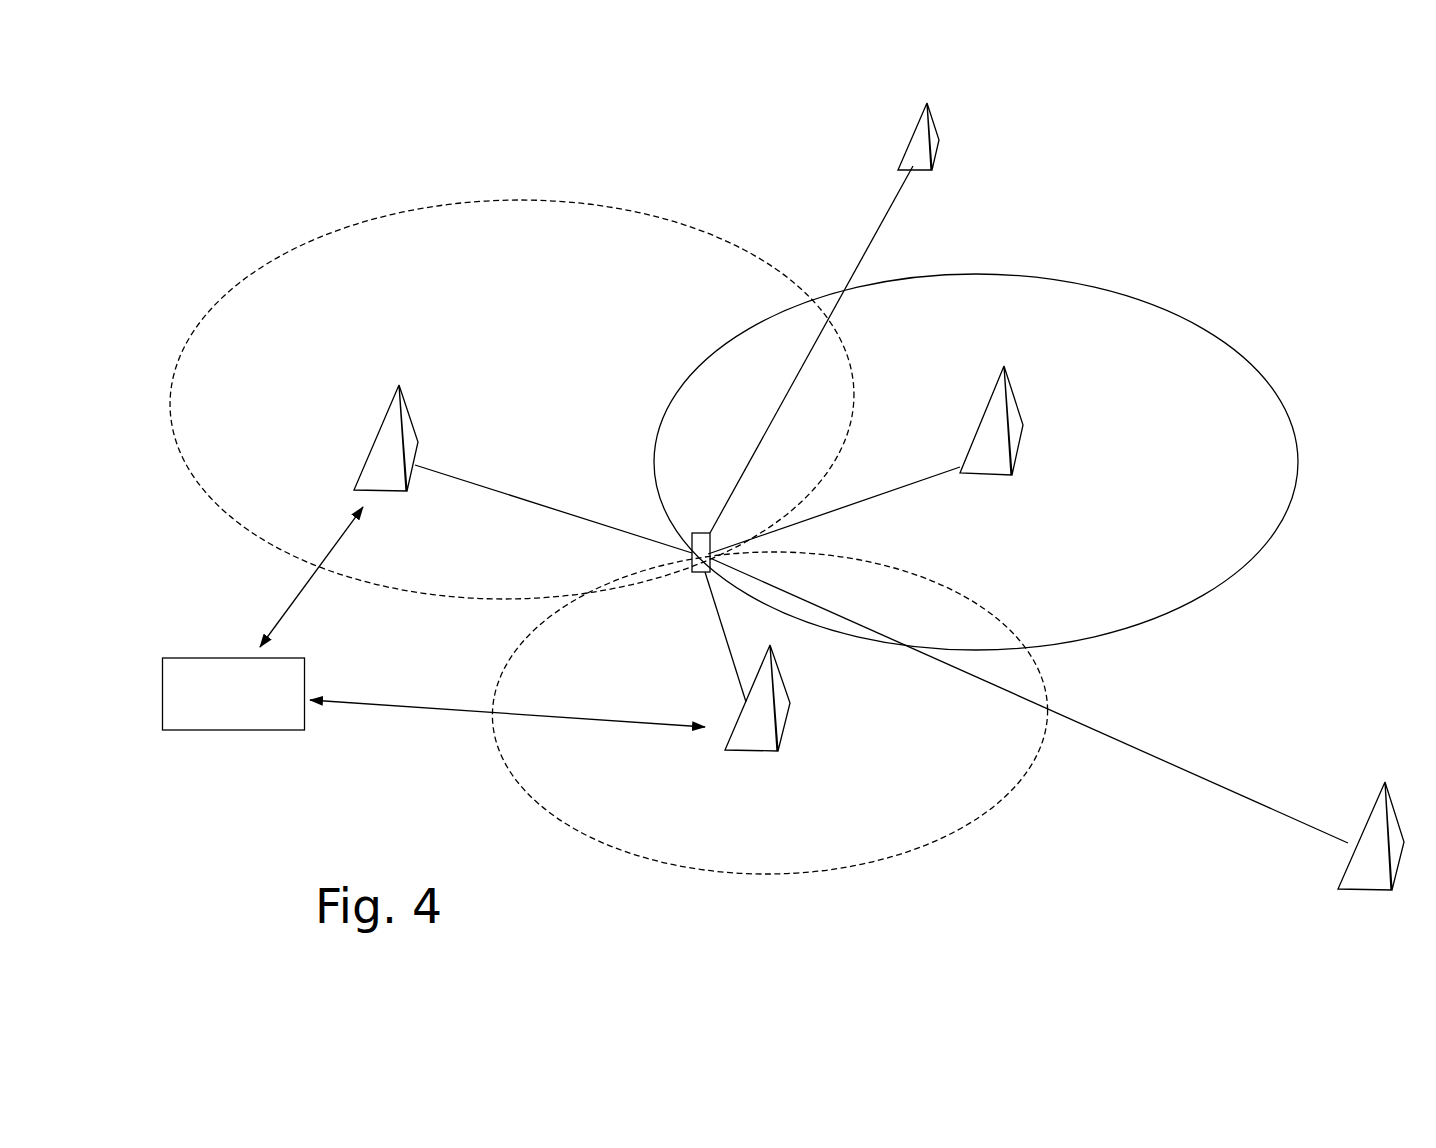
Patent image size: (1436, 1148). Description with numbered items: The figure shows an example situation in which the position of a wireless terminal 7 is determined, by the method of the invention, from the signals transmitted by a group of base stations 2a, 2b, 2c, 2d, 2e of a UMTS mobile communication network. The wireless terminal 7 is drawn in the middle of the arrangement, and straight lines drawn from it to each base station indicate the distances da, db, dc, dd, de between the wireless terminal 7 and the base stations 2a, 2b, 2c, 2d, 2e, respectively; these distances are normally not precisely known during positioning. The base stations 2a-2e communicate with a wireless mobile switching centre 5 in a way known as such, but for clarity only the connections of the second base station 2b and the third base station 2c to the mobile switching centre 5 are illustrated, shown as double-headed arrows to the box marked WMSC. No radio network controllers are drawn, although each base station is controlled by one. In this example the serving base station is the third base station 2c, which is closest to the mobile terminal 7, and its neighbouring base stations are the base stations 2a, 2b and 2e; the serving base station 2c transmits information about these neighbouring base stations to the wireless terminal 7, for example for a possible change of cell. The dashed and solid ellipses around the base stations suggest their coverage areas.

The base station 2a is at (1010, 423).
The second base station 2b is at (357, 479).
The third base station 2c is at (735, 752).
The base station 2d is at (913, 148).
The base station 2e is at (1380, 811).
The wireless mobile switching centre 5 is at (182, 656).
The wireless terminal 7 is at (700, 532).
The distance da is at (906, 486).
The distance db is at (523, 498).
The distance dc is at (722, 640).
The distance dd is at (857, 262).
The distance de is at (1173, 766).